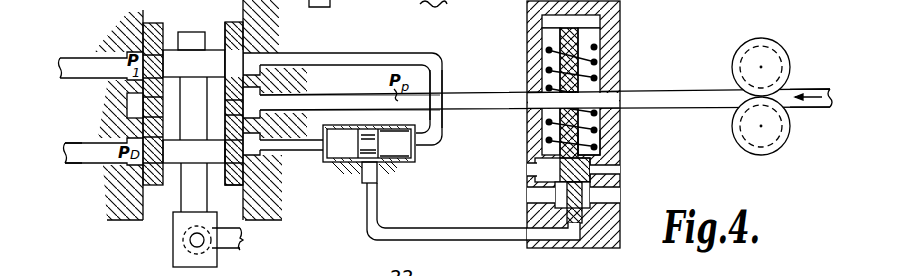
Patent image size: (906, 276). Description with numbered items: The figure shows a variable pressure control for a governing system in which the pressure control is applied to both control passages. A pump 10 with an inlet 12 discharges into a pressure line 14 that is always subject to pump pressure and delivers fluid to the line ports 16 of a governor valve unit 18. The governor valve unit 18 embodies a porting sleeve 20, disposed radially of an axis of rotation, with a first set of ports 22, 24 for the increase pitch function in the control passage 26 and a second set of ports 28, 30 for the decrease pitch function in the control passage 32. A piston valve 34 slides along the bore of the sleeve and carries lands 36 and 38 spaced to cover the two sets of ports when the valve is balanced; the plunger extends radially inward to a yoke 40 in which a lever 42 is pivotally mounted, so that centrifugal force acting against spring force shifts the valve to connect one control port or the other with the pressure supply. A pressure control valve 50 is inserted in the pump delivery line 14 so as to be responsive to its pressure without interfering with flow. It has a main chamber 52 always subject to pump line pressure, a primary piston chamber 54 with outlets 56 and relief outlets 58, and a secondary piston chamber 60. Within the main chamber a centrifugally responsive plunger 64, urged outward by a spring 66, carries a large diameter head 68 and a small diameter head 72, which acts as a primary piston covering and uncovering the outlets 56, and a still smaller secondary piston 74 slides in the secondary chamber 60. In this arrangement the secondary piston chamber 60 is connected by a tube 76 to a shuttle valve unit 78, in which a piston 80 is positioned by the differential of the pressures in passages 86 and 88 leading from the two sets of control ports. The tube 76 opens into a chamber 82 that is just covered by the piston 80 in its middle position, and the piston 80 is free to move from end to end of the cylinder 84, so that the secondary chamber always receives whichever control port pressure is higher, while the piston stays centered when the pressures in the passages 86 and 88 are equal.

The pump 10 is at (770, 137).
The inlet 12 is at (818, 88).
The pressure line 14 is at (488, 109).
The line ports 16 is at (238, 106).
The governor valve unit 18 is at (273, 47).
The porting sleeve 20 is at (153, 182).
The port 22 is at (177, 68).
The port 24 is at (235, 53).
The control passage 26 is at (78, 58).
The port 28 is at (143, 138).
The port 30 is at (245, 160).
The control passage 32 is at (70, 160).
The piston valve 34 is at (185, 187).
The land 36 is at (143, 92).
The land 38 is at (215, 155).
The yoke 40 is at (173, 258).
The lever 42 is at (243, 242).
The pressure control valve 50 is at (574, 137).
The main chamber 52 is at (600, 140).
The primary piston chamber 54 is at (556, 191).
The outlets 56 is at (617, 173).
The outlets 58 is at (617, 199).
The secondary piston chamber 60 is at (575, 230).
The centrifugally responsive plunger 64 is at (573, 78).
The spring 66 is at (598, 62).
The large diameter head 68 is at (600, 33).
The small diameter head 72 is at (557, 165).
The secondary piston 74 is at (582, 214).
The tube 76 is at (460, 230).
The shuttle valve unit 78 is at (416, 160).
The piston 80 is at (373, 148).
The chamber 82 is at (367, 171).
The cylinder 84 is at (410, 158).
The passage 86 is at (441, 128).
The passage 88 is at (302, 146).